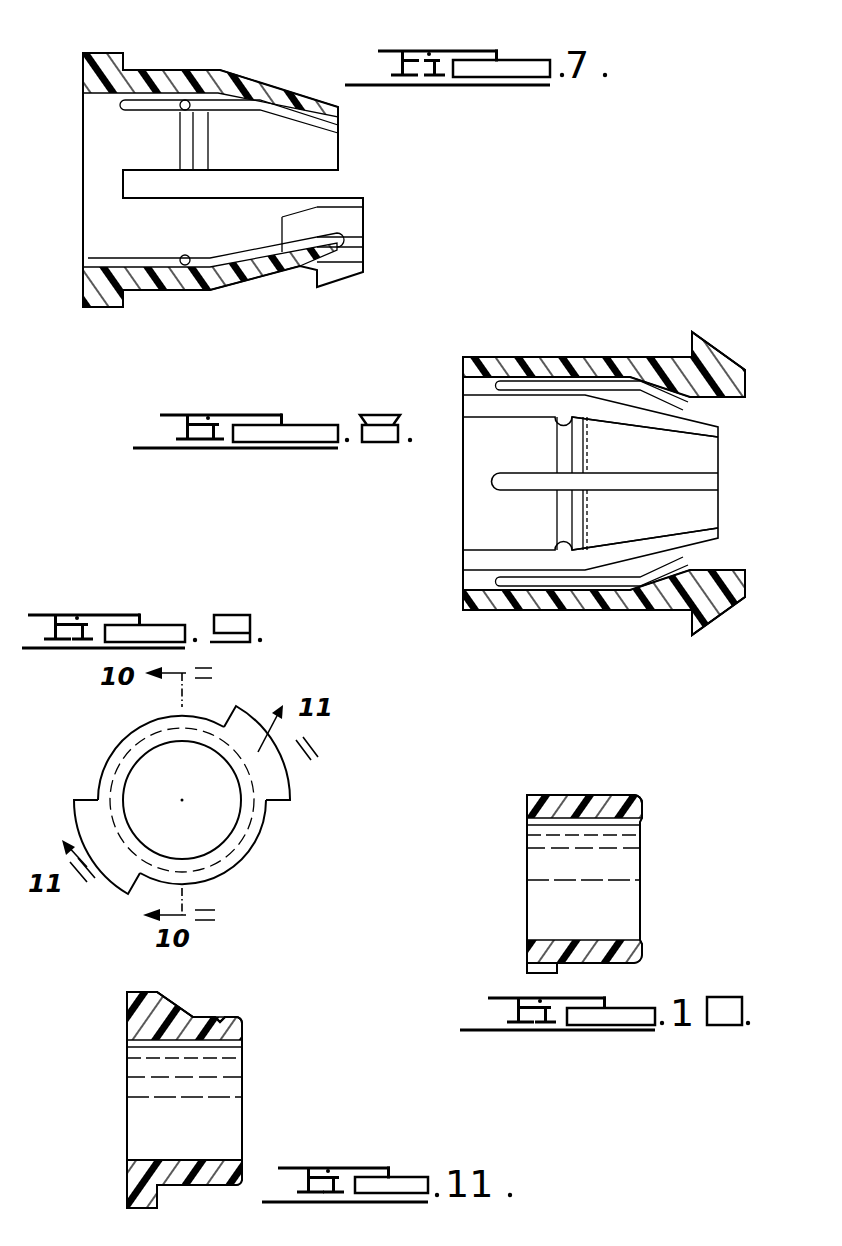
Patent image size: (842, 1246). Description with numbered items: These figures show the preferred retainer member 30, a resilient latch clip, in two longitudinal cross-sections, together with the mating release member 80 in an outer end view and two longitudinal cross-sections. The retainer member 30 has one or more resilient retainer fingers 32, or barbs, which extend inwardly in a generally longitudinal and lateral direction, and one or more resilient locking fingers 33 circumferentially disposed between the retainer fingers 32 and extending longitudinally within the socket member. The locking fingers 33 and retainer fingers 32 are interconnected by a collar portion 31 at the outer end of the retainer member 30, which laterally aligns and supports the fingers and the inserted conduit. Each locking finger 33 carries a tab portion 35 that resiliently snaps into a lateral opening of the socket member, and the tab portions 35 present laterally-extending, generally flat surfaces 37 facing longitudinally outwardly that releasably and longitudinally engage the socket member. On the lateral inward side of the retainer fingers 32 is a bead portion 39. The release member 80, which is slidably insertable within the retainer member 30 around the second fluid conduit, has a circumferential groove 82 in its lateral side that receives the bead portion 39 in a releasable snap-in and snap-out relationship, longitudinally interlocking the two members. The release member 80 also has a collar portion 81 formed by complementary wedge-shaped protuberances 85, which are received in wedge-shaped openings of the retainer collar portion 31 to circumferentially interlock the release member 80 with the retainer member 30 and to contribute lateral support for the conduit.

In FIG. 7, the retainer member 30 is at (158, 58).
In FIG. 8, the retainer member 30 is at (553, 357).
In FIG. 7, the collar portion 31 is at (98, 308).
In FIG. 7, the retainer fingers 32 is at (280, 90).
In FIG. 8, the retainer fingers 32 is at (712, 430).
In FIG. 7, the locking fingers 33 is at (272, 212).
In FIG. 8, the locking fingers 33 is at (620, 357).
In FIG. 8, the tab portions 35 is at (722, 365).
In FIG. 8, the flat surfaces 37 is at (692, 338).
In FIG. 7, the bead portion 39 is at (181, 110).
In FIG. 8, the bead portion 39 is at (560, 515).
In FIG. 9, the release member 80 is at (250, 841).
In FIG. 10, the release member 80 is at (563, 796).
In FIG. 11, the release member 80 is at (126, 1004).
In FIG. 9, the collar portion 81 is at (278, 785).
In FIG. 10, the collar portion 81 is at (565, 966).
In FIG. 11, the collar portion 81 is at (140, 1195).
In FIG. 10, the groove 82 is at (618, 797).
In FIG. 11, the groove 82 is at (222, 1018).
In FIG. 9, the wedge-shaped protuberances 85 is at (242, 718).
In FIG. 10, the wedge-shaped protuberances 85 is at (527, 968).
In FIG. 11, the wedge-shaped protuberances 85 is at (160, 1005).